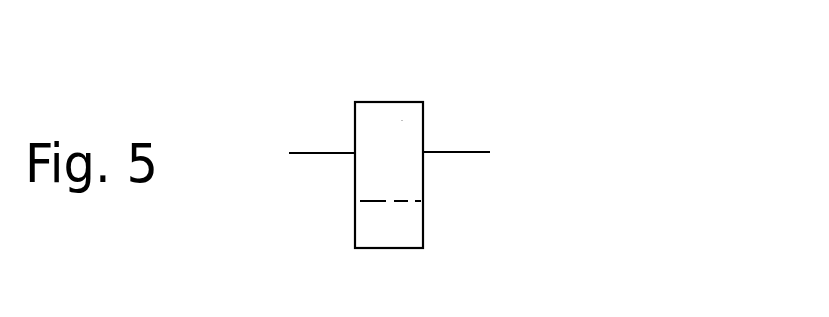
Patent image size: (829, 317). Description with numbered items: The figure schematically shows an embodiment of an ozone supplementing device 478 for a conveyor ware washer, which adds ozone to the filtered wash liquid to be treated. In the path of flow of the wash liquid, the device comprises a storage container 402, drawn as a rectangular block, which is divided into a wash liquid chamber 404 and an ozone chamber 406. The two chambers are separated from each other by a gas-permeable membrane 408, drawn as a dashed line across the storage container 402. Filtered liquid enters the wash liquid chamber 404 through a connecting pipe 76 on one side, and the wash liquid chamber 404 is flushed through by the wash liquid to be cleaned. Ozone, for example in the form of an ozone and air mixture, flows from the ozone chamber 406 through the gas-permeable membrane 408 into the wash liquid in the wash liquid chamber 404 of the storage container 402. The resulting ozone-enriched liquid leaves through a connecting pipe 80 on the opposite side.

The ozone supplementing device 478 is at (575, 75).
The storage container 402 is at (375, 102).
The wash liquid chamber 404 is at (400, 130).
The connecting pipe 76 is at (323, 151).
The connecting pipe 80 is at (460, 150).
The gas-permeable membrane 408 is at (388, 200).
The ozone chamber 406 is at (412, 225).